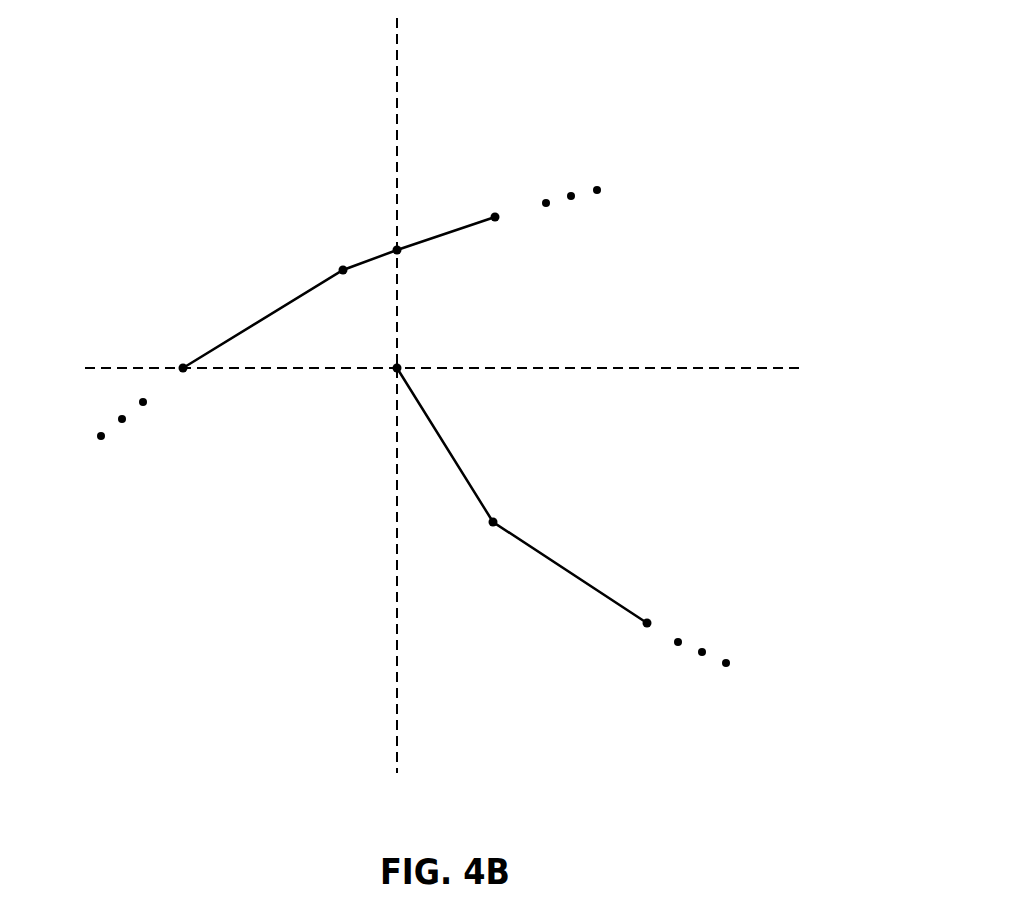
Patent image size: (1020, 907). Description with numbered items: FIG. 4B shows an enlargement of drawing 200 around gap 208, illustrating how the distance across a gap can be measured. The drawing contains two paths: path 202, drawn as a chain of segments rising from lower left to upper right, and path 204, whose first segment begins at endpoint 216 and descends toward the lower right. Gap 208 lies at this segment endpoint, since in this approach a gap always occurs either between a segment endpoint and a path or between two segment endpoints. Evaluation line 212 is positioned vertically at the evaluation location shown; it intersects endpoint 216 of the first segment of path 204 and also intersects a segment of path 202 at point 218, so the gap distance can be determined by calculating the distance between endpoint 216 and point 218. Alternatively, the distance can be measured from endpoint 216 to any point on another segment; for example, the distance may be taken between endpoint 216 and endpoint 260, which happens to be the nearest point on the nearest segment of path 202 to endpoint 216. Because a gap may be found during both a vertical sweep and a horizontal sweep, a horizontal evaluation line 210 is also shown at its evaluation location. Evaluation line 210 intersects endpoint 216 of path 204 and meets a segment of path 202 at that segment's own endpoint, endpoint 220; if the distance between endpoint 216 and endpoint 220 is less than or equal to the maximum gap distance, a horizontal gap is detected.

The drawing 200 is at (650, 108).
The path 202 is at (250, 325).
The path 204 is at (580, 580).
The gap 208 is at (397, 312).
The evaluation line 210 is at (766, 364).
The evaluation line 212 is at (398, 746).
The endpoint 216 is at (396, 372).
The point 218 is at (398, 249).
The endpoint 220 is at (183, 366).
The endpoint 260 is at (343, 268).